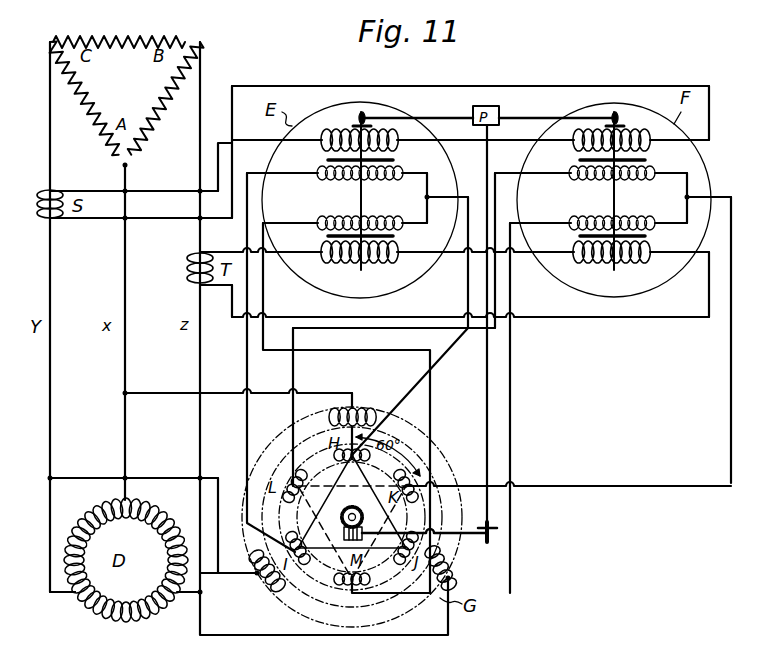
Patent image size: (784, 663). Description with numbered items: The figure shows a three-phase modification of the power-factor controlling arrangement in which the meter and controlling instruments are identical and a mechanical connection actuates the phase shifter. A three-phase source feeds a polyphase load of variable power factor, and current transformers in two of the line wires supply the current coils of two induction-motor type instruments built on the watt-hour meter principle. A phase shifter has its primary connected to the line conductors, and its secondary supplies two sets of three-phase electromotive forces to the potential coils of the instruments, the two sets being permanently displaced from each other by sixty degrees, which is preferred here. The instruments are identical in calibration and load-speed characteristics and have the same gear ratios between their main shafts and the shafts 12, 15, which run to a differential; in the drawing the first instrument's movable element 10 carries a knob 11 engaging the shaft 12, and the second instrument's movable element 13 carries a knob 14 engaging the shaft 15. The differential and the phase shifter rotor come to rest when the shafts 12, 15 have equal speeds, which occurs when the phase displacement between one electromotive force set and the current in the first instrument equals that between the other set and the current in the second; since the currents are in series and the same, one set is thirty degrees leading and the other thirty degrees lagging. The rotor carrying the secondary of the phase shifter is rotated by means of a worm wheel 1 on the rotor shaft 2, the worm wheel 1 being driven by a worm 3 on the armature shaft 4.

The worm wheel 1 is at (352, 507).
The rotor shaft 2 is at (342, 516).
The worm 3 is at (344, 535).
The armature shaft 4 is at (485, 538).
The movable core of relay E 10 is at (363, 197).
The knob of relay E core 11 is at (357, 120).
The shaft 12 is at (428, 118).
The movable core of relay F 13 is at (616, 197).
The knob of relay F core 14 is at (621, 118).
The shaft 15 is at (557, 118).